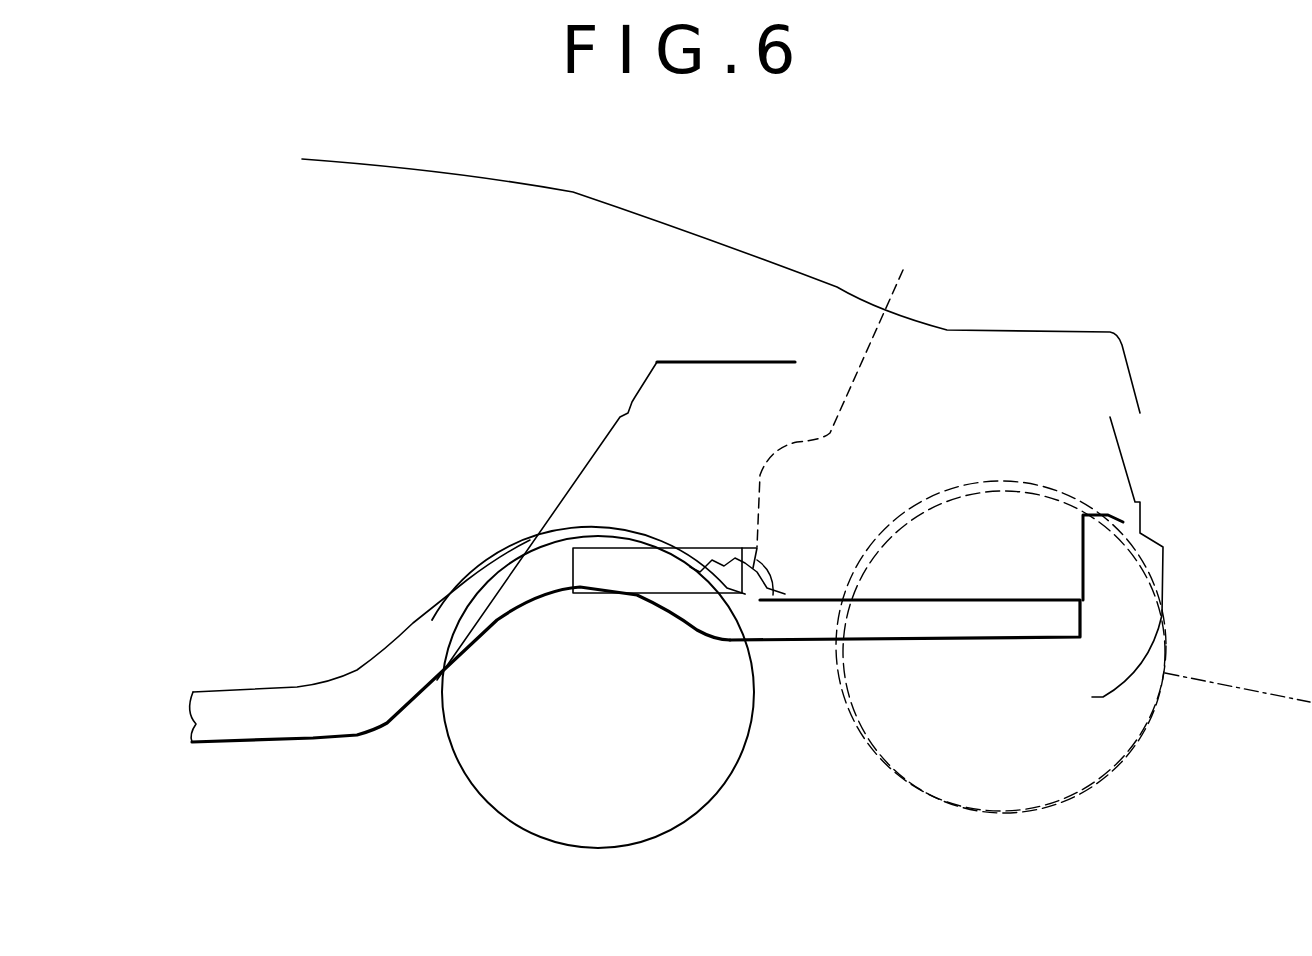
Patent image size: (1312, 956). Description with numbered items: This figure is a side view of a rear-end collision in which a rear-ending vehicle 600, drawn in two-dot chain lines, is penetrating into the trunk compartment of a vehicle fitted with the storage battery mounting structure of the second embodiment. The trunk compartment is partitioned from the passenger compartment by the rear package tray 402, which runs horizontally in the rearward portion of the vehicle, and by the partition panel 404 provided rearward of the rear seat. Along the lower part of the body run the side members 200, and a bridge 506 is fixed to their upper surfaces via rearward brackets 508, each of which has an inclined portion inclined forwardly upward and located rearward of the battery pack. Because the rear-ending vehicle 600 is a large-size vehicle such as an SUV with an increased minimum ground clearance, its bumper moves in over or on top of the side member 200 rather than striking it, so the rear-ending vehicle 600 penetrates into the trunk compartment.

The side member 200 is at (402, 642).
The rear package tray 402 is at (753, 362).
The partition panel 404 is at (598, 455).
The rear-ending vehicle 600 is at (867, 347).
The rearward bracket 508 is at (757, 593).
The bridge 506 is at (790, 597).